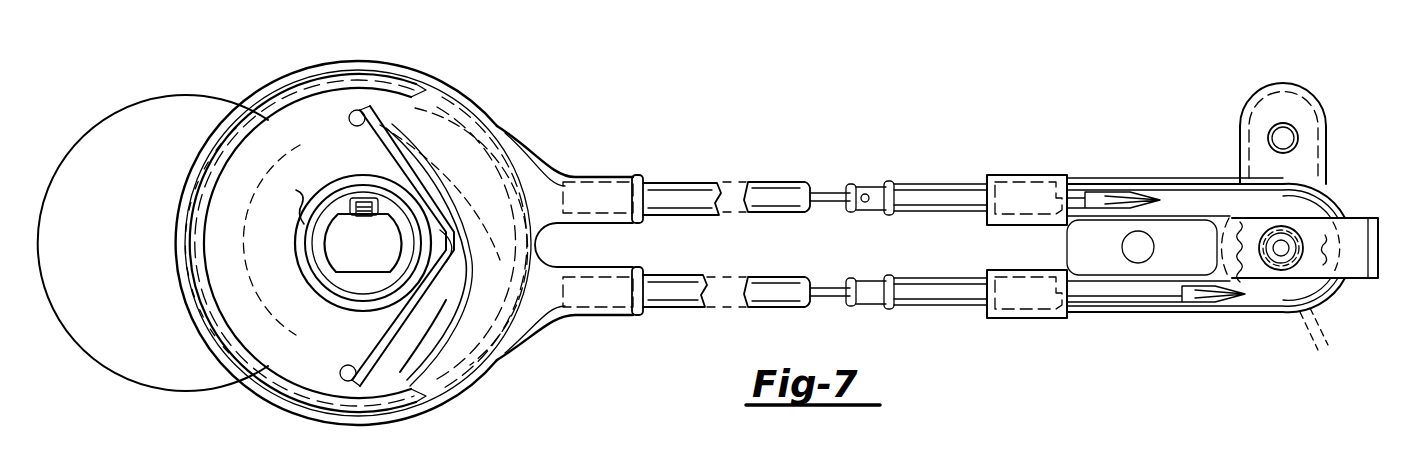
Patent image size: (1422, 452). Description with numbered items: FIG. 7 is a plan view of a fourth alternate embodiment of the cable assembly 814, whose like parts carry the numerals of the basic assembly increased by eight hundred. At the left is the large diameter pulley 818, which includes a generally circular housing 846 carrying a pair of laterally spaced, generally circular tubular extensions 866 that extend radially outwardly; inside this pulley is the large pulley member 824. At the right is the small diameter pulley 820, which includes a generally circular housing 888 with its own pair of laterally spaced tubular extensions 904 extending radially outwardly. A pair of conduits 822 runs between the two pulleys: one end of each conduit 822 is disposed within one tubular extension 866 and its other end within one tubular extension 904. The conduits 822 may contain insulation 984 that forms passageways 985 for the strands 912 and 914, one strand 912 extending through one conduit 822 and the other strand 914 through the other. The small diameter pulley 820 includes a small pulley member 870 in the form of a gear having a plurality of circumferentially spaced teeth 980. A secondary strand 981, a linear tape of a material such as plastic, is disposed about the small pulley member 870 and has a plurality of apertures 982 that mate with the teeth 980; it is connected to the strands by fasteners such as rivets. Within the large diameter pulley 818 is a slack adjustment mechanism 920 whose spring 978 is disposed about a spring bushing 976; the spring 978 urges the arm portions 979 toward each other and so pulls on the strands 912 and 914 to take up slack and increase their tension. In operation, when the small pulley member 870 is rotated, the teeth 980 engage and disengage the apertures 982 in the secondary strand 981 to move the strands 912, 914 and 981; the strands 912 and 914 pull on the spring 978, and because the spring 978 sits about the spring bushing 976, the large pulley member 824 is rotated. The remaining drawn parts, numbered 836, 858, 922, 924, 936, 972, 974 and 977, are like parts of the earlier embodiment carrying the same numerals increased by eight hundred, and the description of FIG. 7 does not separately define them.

The cable assembly 814 is at (667, 126).
The large diameter pulley 818 is at (512, 108).
The small diameter pulley 820 is at (1340, 194).
The conduits 822 is at (768, 180).
The large pulley member 824 is at (437, 305).
The hub 836 is at (332, 272).
The housing 846 is at (470, 398).
The shoe return spring 858 is at (252, 363).
The tubular extensions 866 is at (585, 177).
The small pulley member 870 is at (1312, 296).
The housing 888 is at (1338, 282).
The tubular extensions 904 is at (1015, 174).
The strand 912 is at (840, 300).
The strand 914 is at (838, 190).
The slack adjustment mechanism 920 is at (380, 160).
The brake lining 922 is at (420, 100).
The shoe web 924 is at (268, 384).
The pivot pin 936 is at (362, 112).
The strut strap 972 is at (405, 155).
The conduit divider 974 is at (573, 247).
The spring bushing 976 is at (318, 258).
The hold-down spring 977 is at (298, 192).
The spring 978 is at (440, 232).
The arm portions 979 is at (430, 104).
The teeth 980 is at (1242, 212).
The secondary strand 981 is at (1232, 312).
The apertures 982 is at (1331, 342).
The insulation 984 is at (866, 196).
The passageways 985 is at (858, 206).